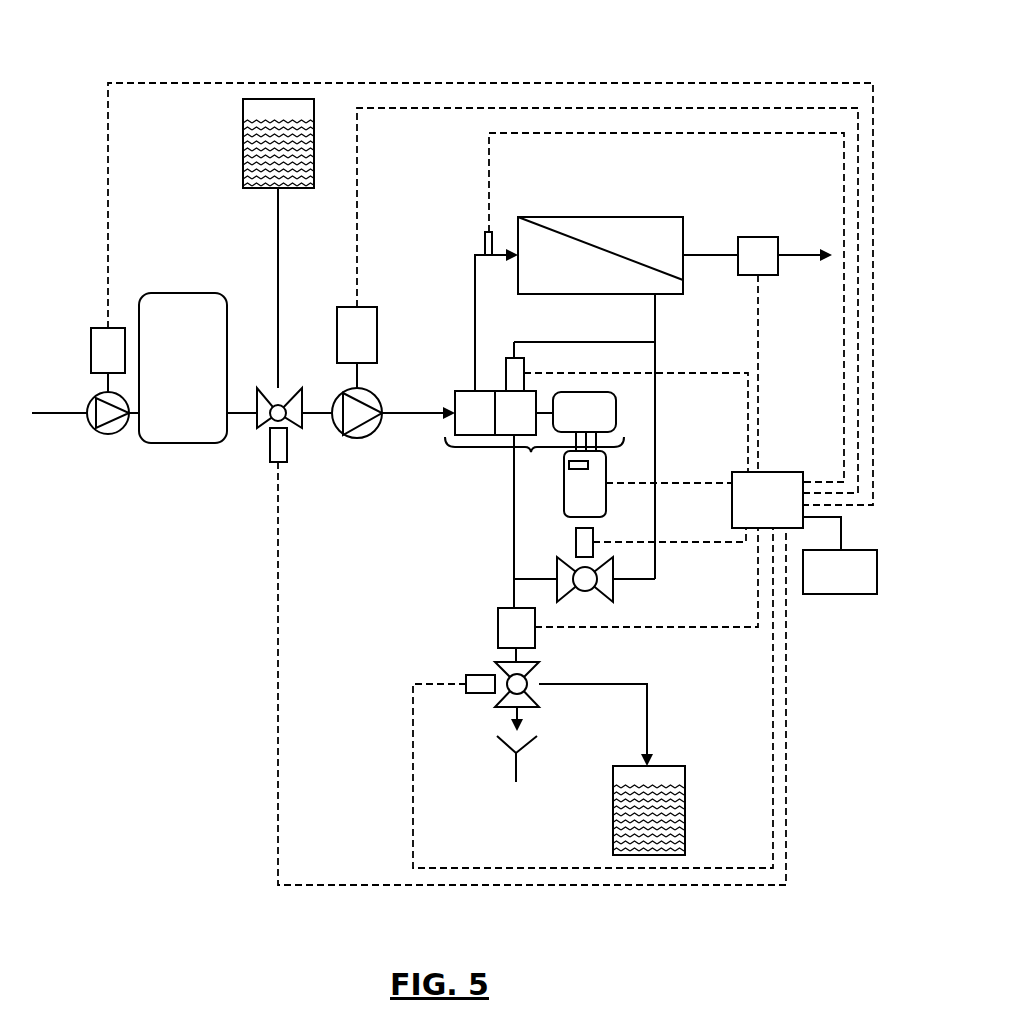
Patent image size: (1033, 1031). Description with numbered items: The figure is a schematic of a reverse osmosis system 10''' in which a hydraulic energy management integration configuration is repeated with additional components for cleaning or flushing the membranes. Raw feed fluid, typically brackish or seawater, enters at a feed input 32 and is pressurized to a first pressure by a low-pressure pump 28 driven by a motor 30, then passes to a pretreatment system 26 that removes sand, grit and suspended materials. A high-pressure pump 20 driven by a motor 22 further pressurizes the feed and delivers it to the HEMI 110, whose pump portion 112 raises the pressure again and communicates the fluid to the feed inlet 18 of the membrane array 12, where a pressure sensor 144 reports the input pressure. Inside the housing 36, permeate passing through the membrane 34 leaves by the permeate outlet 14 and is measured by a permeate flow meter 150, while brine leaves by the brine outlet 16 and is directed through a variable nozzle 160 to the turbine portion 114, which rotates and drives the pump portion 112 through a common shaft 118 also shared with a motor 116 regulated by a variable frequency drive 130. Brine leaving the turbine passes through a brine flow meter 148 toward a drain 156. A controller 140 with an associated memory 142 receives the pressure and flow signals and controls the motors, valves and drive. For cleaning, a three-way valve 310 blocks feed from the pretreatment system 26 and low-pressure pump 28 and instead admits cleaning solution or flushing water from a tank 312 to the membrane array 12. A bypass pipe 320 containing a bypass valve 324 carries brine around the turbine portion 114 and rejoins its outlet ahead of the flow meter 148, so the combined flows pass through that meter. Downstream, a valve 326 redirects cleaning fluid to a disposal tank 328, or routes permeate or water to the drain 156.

The reverse osmosis system 10''' is at (469, 261).
The membrane array 12 is at (600, 234).
The permeate outlet 14 is at (699, 255).
The brine outlet 16 is at (655, 318).
The feed inlet 18 is at (497, 250).
The high-pressure pump 20 is at (357, 438).
The motor 22 is at (377, 322).
The pretreatment system 26 is at (182, 293).
The low-pressure pump 28 is at (108, 434).
The motor 30 is at (91, 343).
The feed input 32 is at (55, 413).
The membrane 34 is at (612, 250).
The housing 36 is at (683, 217).
The hydraulic energy management integration system 110 is at (534, 455).
The pump portion 112 is at (457, 391).
The turbine portion 114 is at (497, 391).
The motor 116 is at (626, 414).
The common shaft 118 is at (543, 397).
The variable frequency drive 130 is at (606, 493).
The controller 140 is at (770, 472).
The memory 142 is at (840, 594).
The pressure sensor 144 is at (485, 233).
The brine flow meter 148 is at (535, 640).
The permeate flow meter 150 is at (769, 237).
The drain 156 is at (528, 742).
The variable nozzle 160 is at (521, 356).
The three-way valve 310 is at (262, 430).
The tank 312 is at (254, 190).
The bypass pipe 320 is at (655, 355).
The bypass valve 324 is at (613, 598).
The valve 326 is at (539, 700).
The disposal tank 328 is at (672, 766).